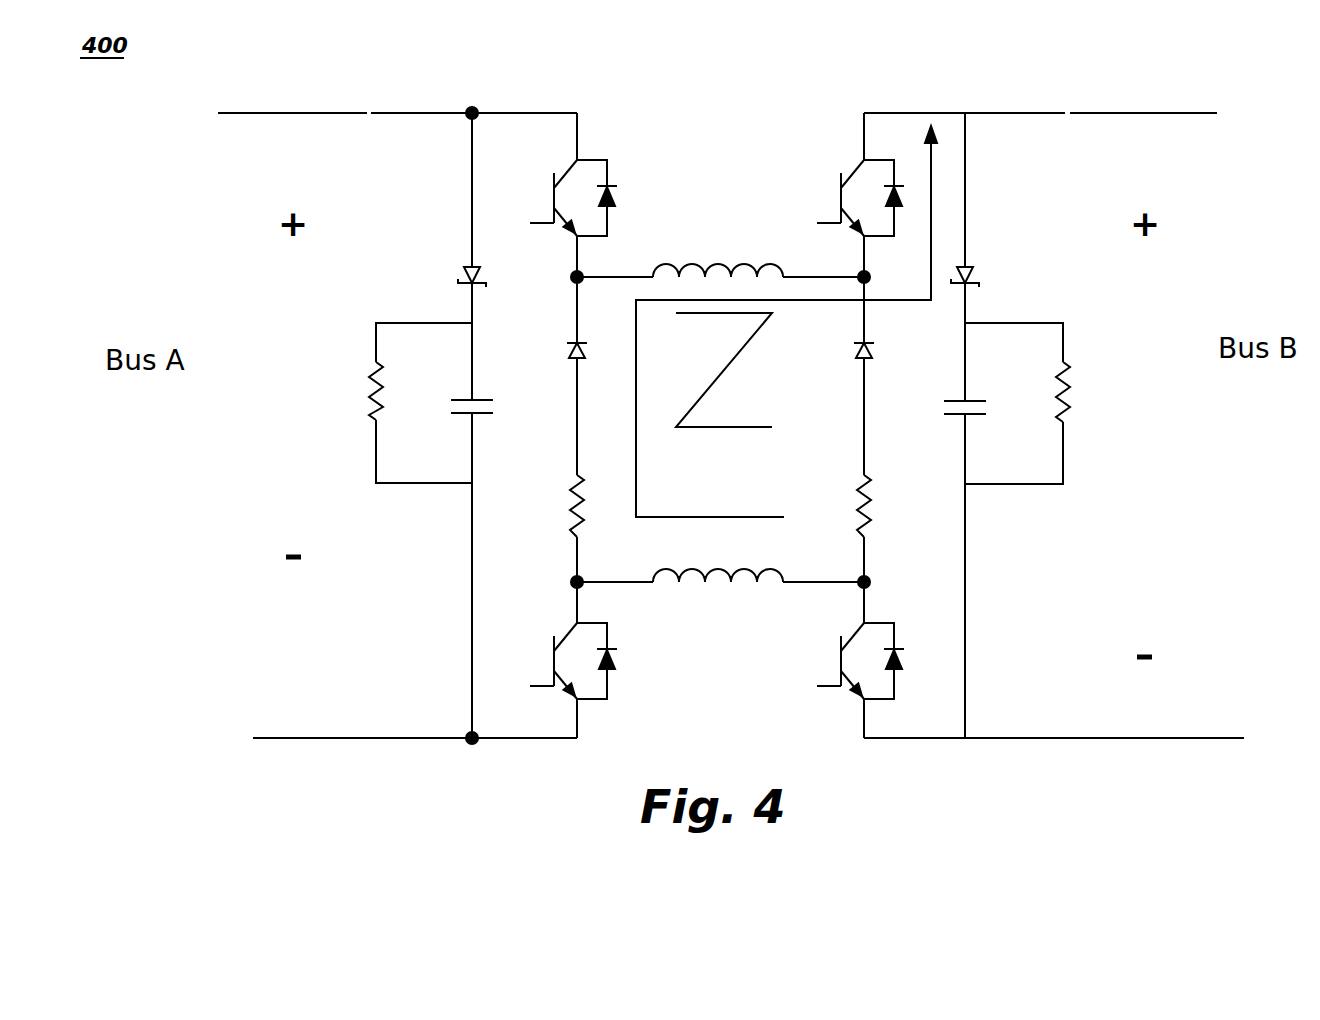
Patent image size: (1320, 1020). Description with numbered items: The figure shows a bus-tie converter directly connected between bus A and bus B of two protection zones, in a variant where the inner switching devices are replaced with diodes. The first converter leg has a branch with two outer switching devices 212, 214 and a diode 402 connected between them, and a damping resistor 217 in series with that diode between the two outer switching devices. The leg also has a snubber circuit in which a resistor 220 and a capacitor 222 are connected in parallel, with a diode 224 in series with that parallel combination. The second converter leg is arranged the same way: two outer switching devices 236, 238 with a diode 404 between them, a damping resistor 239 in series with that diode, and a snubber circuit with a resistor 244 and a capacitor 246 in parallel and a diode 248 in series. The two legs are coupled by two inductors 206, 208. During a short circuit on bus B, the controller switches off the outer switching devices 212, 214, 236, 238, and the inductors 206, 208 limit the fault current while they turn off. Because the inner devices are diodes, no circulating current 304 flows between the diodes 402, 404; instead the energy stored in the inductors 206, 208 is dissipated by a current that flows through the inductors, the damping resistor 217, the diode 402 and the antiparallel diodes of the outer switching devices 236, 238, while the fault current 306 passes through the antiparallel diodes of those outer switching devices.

The outer switching device 212 is at (599, 158).
The outer switching device 214 is at (610, 700).
The outer switching device 236 is at (840, 177).
The outer switching device 238 is at (838, 659).
The inductor 206 is at (742, 262).
The inductor 208 is at (757, 573).
The circulating current 304 is at (636, 403).
The diode 224 is at (479, 268).
The diode 248 is at (970, 268).
The diode 402 is at (575, 357).
The diode 404 is at (863, 357).
The resistor 220 is at (381, 395).
The capacitor 222 is at (462, 418).
The resistor 244 is at (1070, 388).
The capacitor 246 is at (976, 399).
The damping resistor 217 is at (572, 506).
The damping resistor 239 is at (862, 533).
The fault current 306 is at (1243, 693).